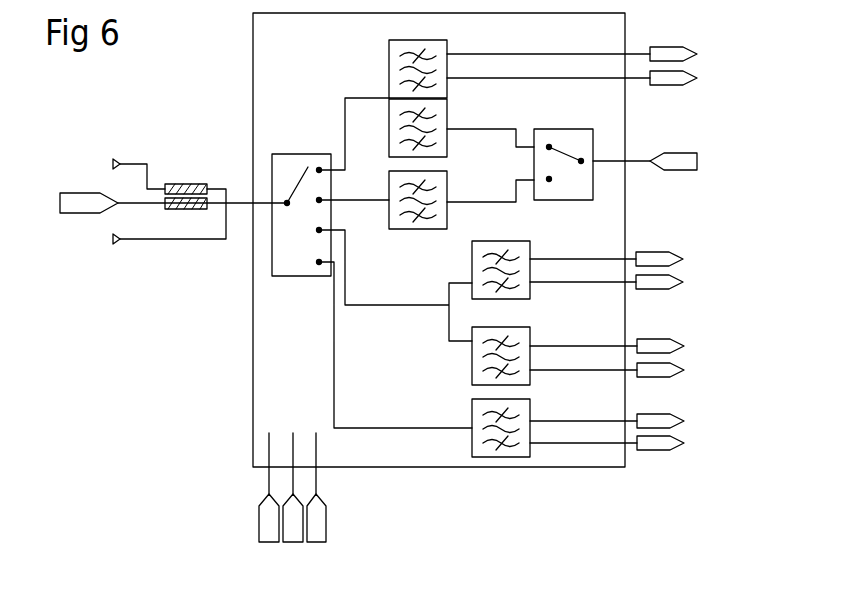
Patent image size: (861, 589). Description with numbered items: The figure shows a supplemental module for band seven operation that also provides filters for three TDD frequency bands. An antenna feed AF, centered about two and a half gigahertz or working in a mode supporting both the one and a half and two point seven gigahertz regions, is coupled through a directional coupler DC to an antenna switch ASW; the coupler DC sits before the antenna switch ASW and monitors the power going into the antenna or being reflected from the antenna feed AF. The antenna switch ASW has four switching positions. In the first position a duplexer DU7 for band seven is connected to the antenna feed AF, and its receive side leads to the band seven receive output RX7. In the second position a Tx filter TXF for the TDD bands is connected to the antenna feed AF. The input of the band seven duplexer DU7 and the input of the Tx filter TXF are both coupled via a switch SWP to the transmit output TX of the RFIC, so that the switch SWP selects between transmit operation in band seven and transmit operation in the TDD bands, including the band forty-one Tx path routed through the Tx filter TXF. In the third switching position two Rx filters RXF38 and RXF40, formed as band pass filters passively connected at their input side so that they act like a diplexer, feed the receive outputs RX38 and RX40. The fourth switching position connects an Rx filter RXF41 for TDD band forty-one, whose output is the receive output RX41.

The antenna feed AF is at (88, 201).
The directional coupler DC is at (183, 185).
The antenna switch ASW is at (286, 156).
The duplexer for band 7 DU7 is at (382, 70).
The Tx filter TXF is at (447, 211).
The switch SWP is at (596, 109).
The Rx filter for TDD band 38 RXF38 is at (472, 265).
The Rx filter for TDD band 40 RXF40 is at (472, 370).
The Rx filter for TDD band 41 RXF41 is at (518, 441).
The Rx output for band 7 RX7 is at (701, 56).
The Tx output TX is at (683, 153).
The Rx output for band 38 RX38 is at (691, 261).
The Rx output for band 40 RX40 is at (694, 355).
The Rx output for band 41 RX41 is at (697, 428).